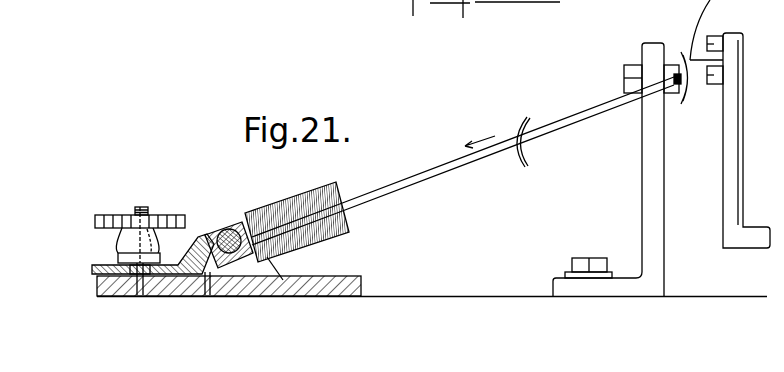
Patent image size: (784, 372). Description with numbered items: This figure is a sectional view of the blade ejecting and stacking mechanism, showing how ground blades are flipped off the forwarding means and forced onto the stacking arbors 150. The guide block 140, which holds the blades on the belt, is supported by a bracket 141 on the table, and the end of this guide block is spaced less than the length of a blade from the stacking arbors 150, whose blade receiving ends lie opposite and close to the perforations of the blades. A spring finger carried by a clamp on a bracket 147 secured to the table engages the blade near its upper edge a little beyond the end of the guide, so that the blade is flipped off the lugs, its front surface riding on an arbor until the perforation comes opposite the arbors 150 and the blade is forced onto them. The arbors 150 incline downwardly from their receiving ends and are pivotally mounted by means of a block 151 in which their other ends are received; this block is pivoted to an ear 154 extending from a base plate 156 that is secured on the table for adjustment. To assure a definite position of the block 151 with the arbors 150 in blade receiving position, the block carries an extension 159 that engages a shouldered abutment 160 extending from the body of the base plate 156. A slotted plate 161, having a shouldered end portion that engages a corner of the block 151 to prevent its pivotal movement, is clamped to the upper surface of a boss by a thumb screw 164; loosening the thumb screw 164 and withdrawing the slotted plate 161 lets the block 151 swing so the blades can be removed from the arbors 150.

The guide block 140 is at (671, 62).
The bracket 141 is at (640, 196).
The bracket 147 is at (726, 186).
The stacking arbors 150 is at (416, 173).
The block 151 is at (222, 236).
The ear 154 is at (280, 265).
The base plate 156 is at (362, 288).
The extension 159 is at (227, 274).
The shouldered abutment 160 is at (208, 293).
The slotted plate 161 is at (92, 266).
The thumb screw 164 is at (100, 213).